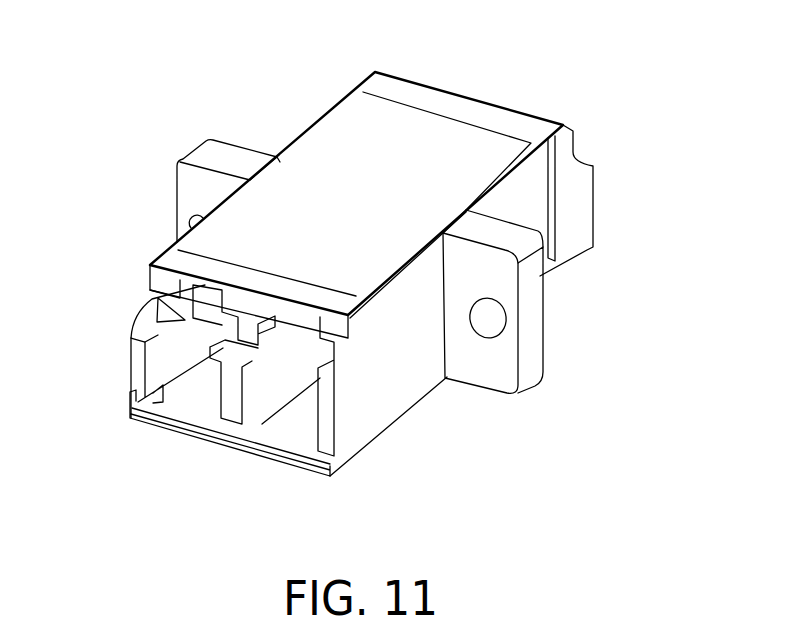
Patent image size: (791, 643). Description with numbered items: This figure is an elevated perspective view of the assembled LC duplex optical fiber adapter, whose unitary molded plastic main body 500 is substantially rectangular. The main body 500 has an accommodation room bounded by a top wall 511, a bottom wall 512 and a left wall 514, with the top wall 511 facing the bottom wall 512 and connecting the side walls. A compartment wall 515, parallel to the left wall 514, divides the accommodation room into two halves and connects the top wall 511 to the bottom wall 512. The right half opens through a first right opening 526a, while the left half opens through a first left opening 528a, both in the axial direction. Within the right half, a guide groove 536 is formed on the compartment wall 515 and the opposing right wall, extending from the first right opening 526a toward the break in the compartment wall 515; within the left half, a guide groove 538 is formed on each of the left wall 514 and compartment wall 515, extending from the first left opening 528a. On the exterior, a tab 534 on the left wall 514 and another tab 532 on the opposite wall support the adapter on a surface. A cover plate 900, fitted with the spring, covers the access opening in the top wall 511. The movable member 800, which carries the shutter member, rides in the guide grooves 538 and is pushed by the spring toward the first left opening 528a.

The main body 500 is at (478, 84).
The cover plate 900 is at (483, 153).
The top wall 511 is at (190, 263).
The tab 534 is at (199, 177).
The left wall 514 is at (215, 212).
The tab 532 is at (503, 353).
The movable member 800 is at (170, 310).
The guide groove 538 is at (175, 340).
The first left opening 528a is at (178, 415).
The compartment wall 515 is at (227, 405).
The bottom wall 512 is at (232, 447).
The first right opening 526a is at (292, 440).
The guide groove 536 is at (334, 345).